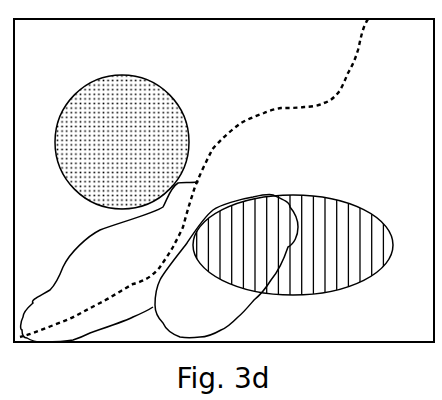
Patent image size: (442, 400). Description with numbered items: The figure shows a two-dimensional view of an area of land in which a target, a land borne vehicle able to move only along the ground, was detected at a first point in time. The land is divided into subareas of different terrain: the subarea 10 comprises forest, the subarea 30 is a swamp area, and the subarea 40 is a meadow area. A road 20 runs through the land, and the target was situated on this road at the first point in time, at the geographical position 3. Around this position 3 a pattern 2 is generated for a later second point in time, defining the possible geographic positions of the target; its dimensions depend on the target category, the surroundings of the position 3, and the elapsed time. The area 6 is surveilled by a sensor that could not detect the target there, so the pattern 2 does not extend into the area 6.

The pattern 2 is at (102, 272).
The geographical position 3 is at (207, 176).
The area 6 is at (187, 313).
The subarea 10 is at (111, 152).
The road 20 is at (284, 92).
The subarea 30 is at (282, 255).
The subarea 40 is at (54, 242).